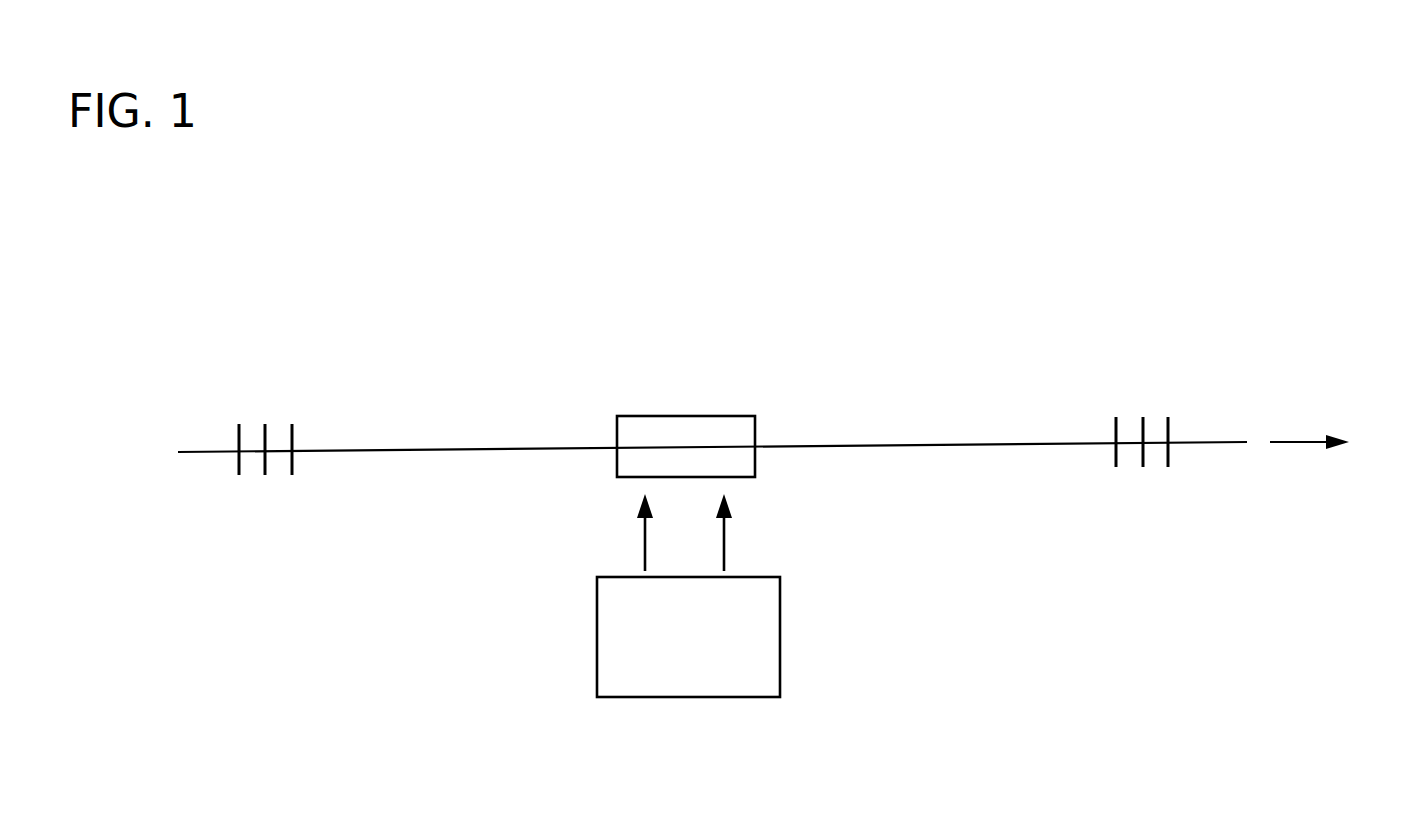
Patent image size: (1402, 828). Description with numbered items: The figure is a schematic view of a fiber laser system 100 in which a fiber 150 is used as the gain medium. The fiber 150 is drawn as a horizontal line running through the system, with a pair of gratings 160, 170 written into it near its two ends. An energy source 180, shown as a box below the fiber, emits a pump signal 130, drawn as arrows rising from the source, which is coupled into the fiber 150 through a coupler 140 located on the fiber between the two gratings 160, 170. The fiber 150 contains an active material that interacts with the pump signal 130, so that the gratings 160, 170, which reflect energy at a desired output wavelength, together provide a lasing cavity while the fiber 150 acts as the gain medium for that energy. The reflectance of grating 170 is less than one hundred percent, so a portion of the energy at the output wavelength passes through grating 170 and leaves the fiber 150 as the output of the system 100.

The fiber laser system 100 is at (200, 383).
The pump signal 130 is at (740, 539).
The coupler 140 is at (723, 428).
The fiber 150 is at (472, 445).
The grating 160 is at (278, 413).
The grating 170 is at (1147, 408).
The energy source 180 is at (711, 655).